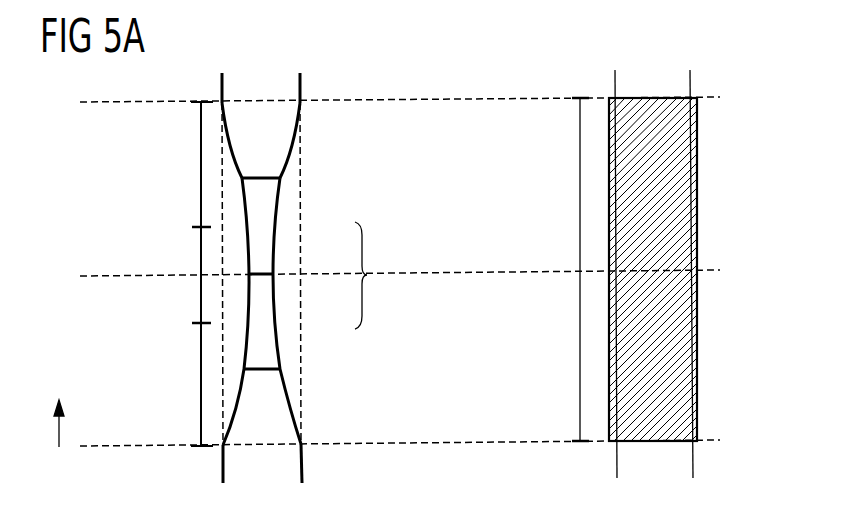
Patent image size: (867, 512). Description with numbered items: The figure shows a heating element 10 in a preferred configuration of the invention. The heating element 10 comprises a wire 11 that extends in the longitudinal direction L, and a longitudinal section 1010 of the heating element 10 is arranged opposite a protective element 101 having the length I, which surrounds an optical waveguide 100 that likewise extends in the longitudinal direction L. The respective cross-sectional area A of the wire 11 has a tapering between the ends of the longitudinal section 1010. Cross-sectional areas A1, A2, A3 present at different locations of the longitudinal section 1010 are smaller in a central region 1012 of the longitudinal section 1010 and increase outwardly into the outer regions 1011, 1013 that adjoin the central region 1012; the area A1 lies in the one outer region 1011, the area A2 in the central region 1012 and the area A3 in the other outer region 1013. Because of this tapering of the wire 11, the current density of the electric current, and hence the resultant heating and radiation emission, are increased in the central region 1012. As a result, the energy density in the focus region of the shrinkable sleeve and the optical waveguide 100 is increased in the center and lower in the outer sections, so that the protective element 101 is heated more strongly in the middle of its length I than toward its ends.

The heating element 10 is at (220, 90).
The wire 11 is at (284, 89).
The longitudinal section 1010 is at (324, 274).
The outer region 1011 is at (200, 176).
The central region 1012 is at (200, 264).
The outer region 1013 is at (201, 366).
The cross-sectional area A1 is at (260, 180).
The cross-sectional area A2 is at (266, 271).
The cross-sectional area A3 is at (267, 367).
The cross-sectional area A is at (372, 275).
The length I is at (577, 269).
The longitudinal direction L is at (51, 427).
The optical waveguide 100 is at (690, 86).
The protective element 101 is at (698, 140).